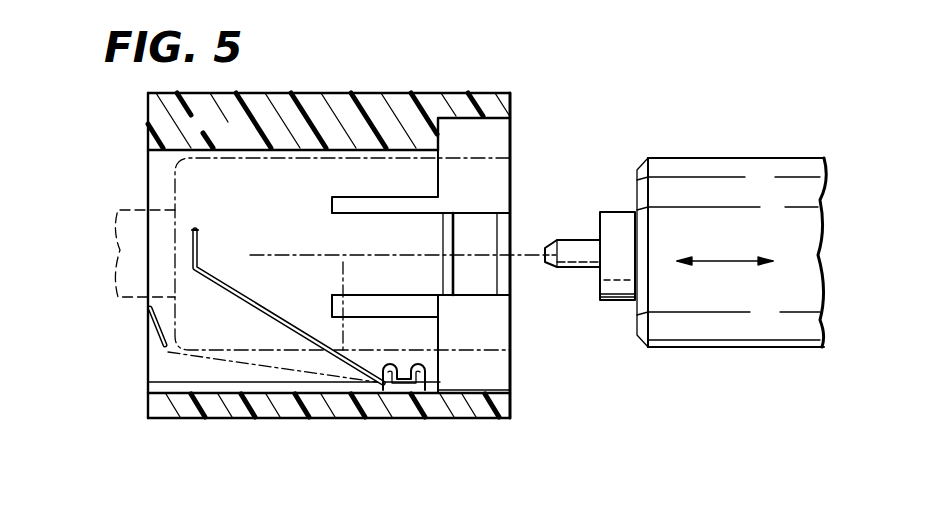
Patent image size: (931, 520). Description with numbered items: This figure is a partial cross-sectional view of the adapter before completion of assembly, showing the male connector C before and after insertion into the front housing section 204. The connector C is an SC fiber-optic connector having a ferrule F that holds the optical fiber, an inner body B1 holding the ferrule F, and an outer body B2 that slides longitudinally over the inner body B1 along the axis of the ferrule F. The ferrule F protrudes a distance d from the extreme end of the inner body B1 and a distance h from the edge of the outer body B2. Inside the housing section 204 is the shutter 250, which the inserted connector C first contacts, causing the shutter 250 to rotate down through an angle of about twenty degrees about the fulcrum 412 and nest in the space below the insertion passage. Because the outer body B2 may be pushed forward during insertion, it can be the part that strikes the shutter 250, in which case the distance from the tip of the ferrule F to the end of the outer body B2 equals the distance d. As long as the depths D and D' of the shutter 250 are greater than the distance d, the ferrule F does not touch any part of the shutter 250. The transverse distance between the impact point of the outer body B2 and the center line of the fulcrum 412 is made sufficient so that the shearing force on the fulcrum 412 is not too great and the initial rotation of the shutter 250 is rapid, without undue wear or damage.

The inner body B1 is at (134, 210).
The outer body B2 is at (238, 158).
The male connector C is at (765, 146).
The ferrule F is at (572, 240).
The front housing section 204 is at (336, 418).
The shutter 250 is at (249, 310).
The fulcrum 412 is at (397, 393).
The depth D is at (271, 235).
The depth D' is at (232, 260).
The distance h is at (526, 197).
The distance d is at (545, 262).